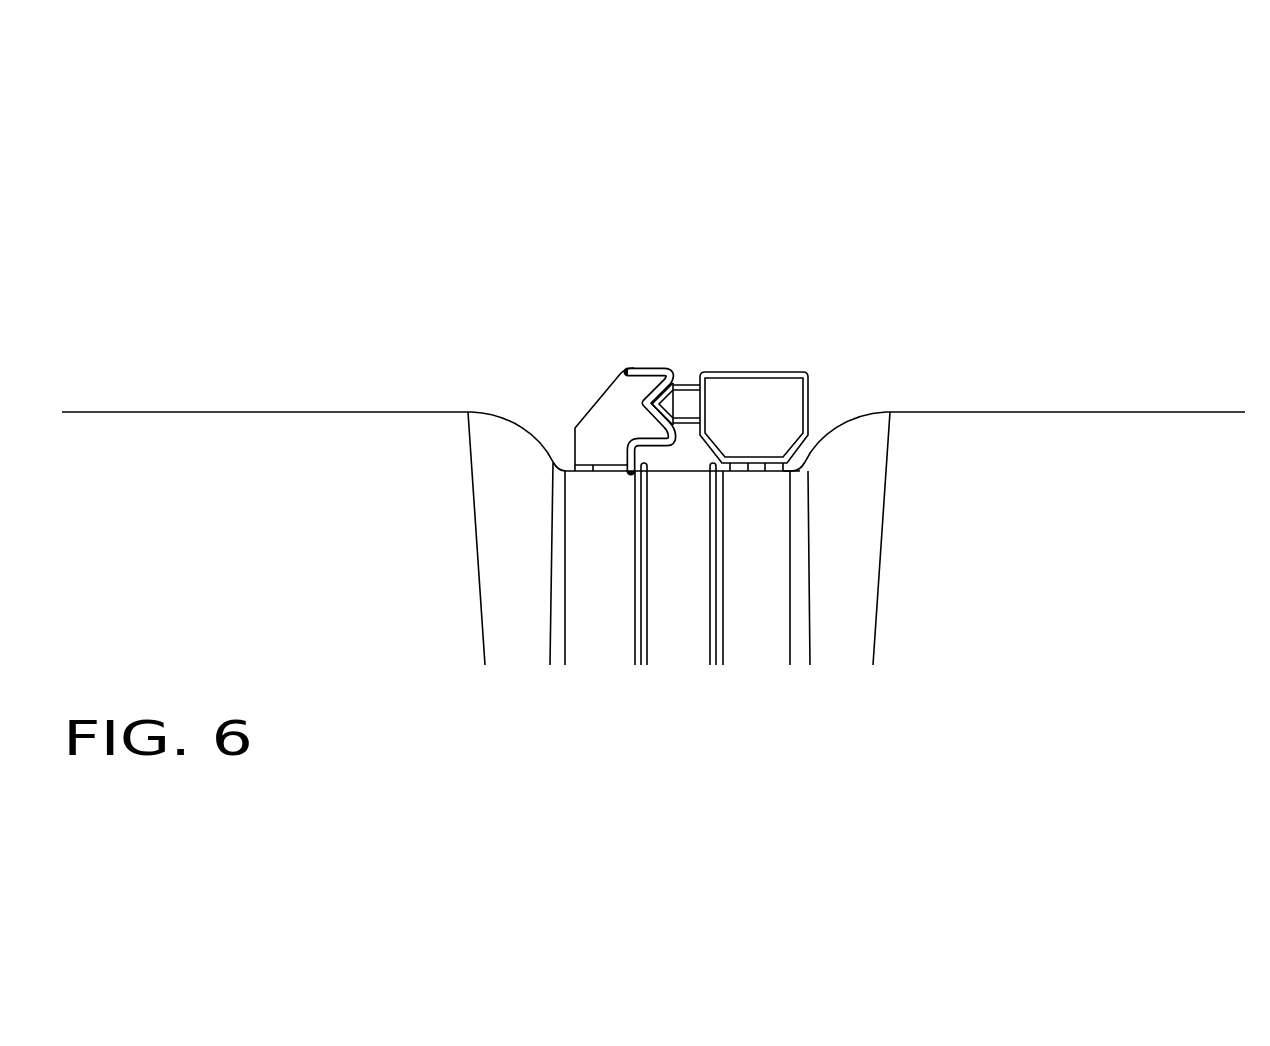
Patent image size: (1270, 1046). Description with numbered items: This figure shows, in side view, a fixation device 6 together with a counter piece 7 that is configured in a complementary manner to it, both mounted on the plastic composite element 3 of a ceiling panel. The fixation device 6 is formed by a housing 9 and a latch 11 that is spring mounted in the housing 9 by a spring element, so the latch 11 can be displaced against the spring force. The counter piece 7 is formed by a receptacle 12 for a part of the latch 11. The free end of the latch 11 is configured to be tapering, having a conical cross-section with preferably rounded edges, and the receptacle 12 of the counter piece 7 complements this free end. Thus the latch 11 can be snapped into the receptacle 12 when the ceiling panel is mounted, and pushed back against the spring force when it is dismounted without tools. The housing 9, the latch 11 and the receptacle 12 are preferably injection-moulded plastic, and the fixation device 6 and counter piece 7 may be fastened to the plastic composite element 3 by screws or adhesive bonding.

The plastic composite element 3 is at (342, 575).
The fixation device 6 is at (772, 371).
The counter piece 7 is at (609, 407).
The housing 9 is at (768, 410).
The latch 11 is at (683, 408).
The receptacle 12 is at (657, 405).